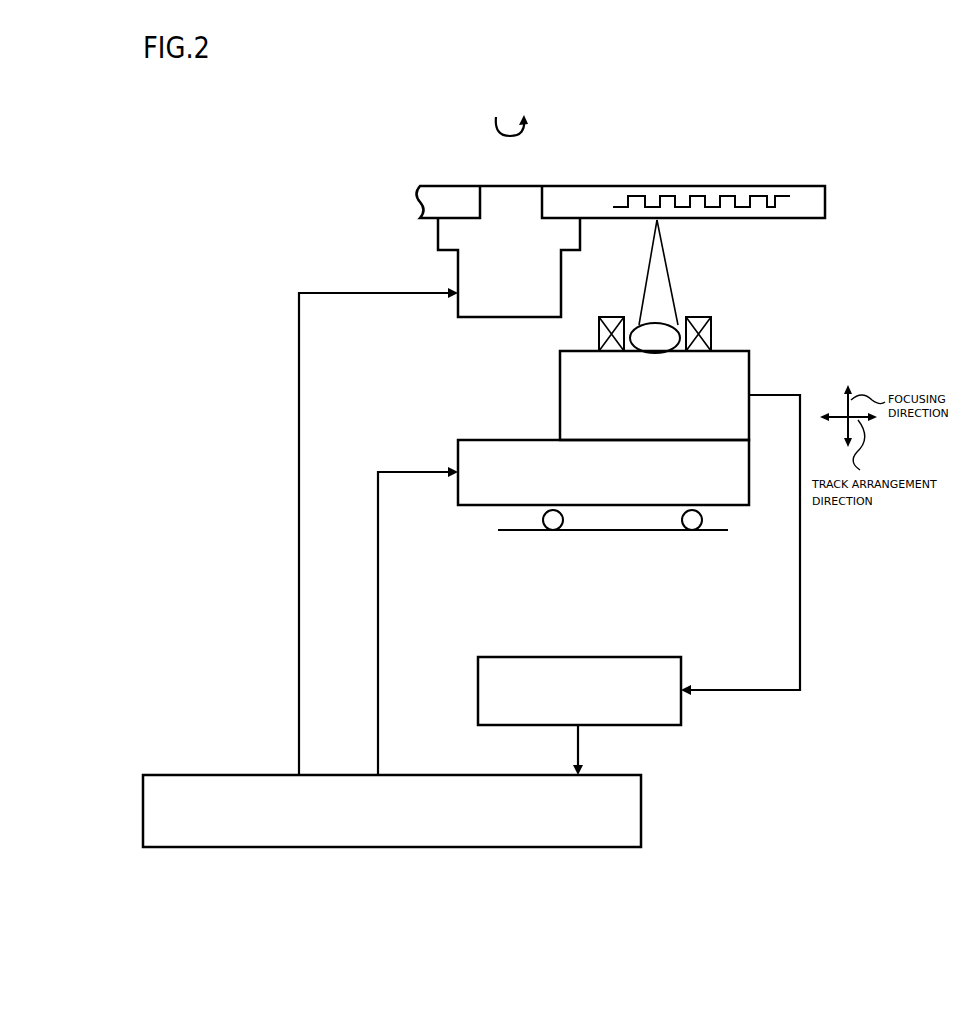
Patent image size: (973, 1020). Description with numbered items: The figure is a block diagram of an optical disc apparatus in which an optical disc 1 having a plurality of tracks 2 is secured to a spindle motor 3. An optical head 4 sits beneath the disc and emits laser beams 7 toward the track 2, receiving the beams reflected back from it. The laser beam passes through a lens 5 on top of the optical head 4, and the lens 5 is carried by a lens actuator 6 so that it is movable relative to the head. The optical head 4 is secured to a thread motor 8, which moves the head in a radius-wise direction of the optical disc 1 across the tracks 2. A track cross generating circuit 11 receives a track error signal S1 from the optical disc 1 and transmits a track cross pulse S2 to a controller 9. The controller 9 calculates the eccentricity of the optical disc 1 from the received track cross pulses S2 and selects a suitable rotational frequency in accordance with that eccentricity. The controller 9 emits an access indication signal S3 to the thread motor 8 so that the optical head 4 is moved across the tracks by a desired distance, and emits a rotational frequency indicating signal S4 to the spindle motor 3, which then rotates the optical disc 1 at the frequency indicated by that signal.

The optical disc 1 is at (590, 186).
The tracks 2 is at (777, 196).
The spindle motor 3 is at (438, 232).
The optical head 4 is at (560, 390).
The lens 5 is at (680, 316).
The lens actuator 6 is at (711, 330).
The laser beams 7 is at (660, 245).
The thread motor 8 is at (458, 458).
The controller 9 is at (641, 810).
The track cross generating circuit 11 is at (633, 657).
The track error signal S1 is at (800, 590).
The track cross pulse S2 is at (580, 754).
The access indication signal S3 is at (418, 621).
The rotational frequency indicating signal S4 is at (378, 531).